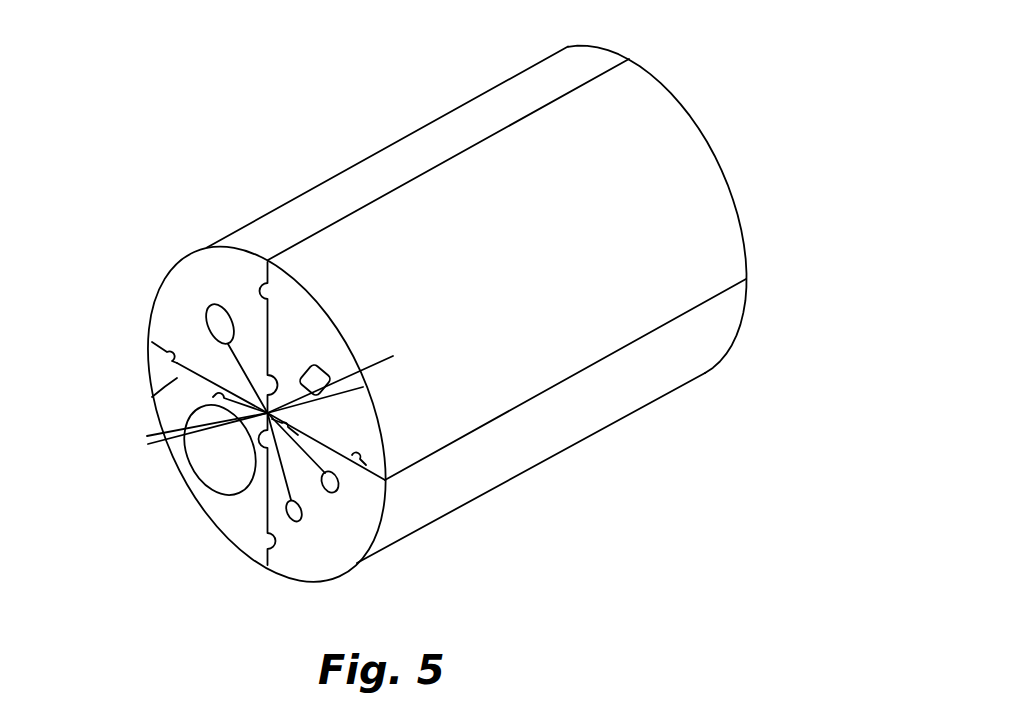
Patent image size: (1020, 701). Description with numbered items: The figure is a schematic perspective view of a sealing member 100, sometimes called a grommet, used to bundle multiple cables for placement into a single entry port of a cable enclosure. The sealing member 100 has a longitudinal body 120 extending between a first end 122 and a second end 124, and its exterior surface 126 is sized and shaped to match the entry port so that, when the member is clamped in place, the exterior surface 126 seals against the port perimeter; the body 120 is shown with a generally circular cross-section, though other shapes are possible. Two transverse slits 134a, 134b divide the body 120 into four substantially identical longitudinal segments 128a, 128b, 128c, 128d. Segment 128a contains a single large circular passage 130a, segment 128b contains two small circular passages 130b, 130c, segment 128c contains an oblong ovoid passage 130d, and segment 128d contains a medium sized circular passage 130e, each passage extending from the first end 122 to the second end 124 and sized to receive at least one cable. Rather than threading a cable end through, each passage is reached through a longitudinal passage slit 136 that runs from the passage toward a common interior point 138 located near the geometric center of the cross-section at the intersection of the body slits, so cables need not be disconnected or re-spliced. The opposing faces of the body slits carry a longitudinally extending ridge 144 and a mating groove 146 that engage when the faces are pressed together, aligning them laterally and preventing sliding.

The sealing member 100 is at (348, 100).
The longitudinal body 120 is at (459, 126).
The first end 122 is at (219, 505).
The second end 124 is at (644, 63).
The exterior surface 126 is at (672, 105).
The segment 128a is at (237, 525).
The segment 128b is at (299, 566).
The segment 128c is at (363, 403).
The segment 128d is at (185, 273).
The passage 130a is at (205, 460).
The passage 130b is at (288, 518).
The passage 130c is at (338, 493).
The passage 130d is at (328, 363).
The passage 130e is at (208, 322).
The transverse slit 134a is at (272, 322).
The transverse slit 134b is at (381, 431).
The passage slit 136 is at (322, 517).
The interior point 138 is at (342, 374).
The ridge 144 is at (163, 343).
The groove 146 is at (153, 396).